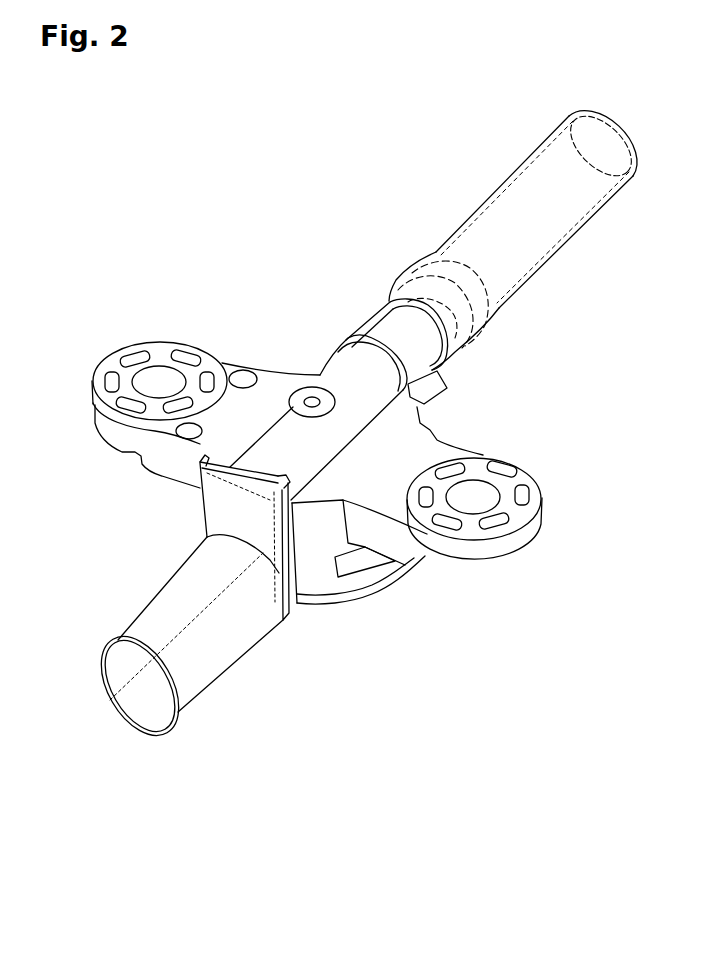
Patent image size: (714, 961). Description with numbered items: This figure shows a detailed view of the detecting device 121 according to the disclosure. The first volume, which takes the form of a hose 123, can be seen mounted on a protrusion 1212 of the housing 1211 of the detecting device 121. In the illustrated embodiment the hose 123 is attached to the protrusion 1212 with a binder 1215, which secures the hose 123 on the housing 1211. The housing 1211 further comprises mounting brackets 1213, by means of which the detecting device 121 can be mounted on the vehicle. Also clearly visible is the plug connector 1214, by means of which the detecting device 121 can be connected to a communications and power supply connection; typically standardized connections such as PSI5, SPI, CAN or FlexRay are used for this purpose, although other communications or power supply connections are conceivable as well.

The detecting device 121 is at (272, 400).
The housing 1211 is at (230, 518).
The protrusion 1212 is at (456, 268).
The mounting brackets 1213 is at (143, 380).
The plug connector 1214 is at (138, 716).
The binder 1215 is at (390, 303).
The hose 123 is at (545, 236).